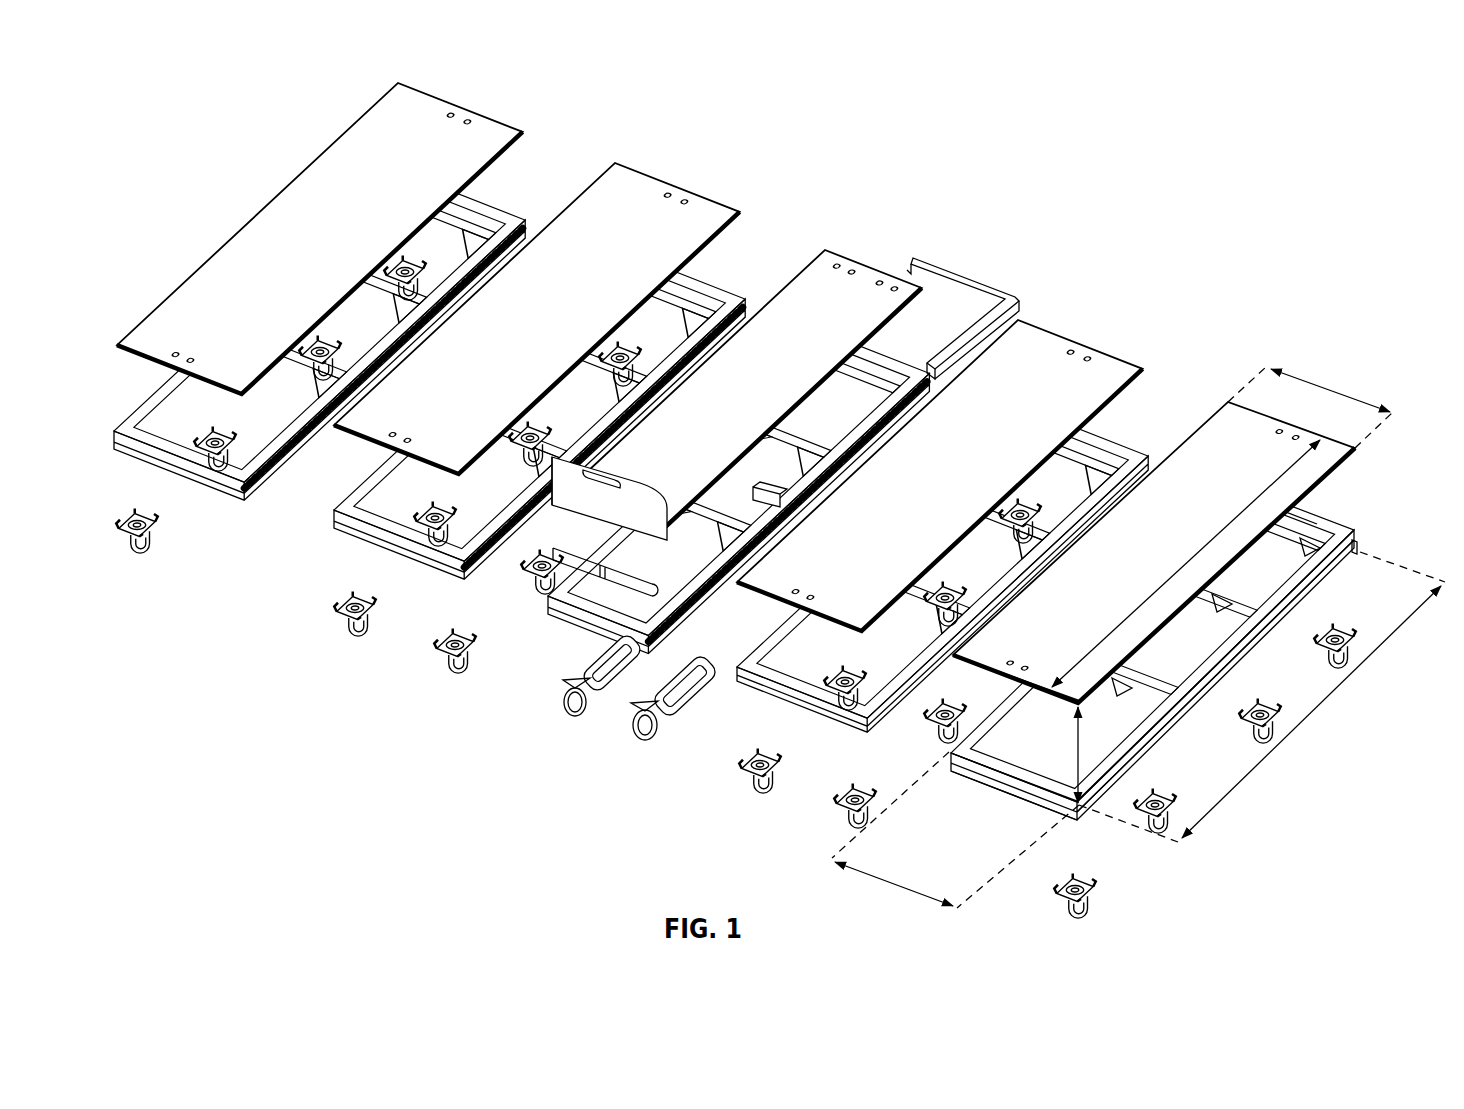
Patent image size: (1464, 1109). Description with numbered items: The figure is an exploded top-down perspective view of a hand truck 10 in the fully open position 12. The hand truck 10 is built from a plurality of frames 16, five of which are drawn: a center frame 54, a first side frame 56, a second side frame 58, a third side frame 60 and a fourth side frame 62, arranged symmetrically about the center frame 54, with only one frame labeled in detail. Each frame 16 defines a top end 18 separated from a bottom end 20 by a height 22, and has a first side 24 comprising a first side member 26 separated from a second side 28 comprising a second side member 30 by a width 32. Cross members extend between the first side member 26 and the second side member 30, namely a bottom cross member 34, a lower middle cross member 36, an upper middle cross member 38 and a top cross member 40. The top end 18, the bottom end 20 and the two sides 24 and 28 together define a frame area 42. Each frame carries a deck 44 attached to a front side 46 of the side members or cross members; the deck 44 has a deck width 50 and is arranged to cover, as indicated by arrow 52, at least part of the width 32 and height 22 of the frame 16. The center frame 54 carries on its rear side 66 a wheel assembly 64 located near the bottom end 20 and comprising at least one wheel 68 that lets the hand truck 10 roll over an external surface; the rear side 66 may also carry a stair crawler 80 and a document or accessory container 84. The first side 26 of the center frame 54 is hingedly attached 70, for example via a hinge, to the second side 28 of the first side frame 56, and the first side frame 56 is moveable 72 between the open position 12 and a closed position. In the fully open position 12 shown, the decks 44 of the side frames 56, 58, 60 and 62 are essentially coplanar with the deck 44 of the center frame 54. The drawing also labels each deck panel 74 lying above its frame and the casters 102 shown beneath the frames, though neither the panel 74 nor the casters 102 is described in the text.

The hand truck 10 is at (990, 125).
The fully open position 12 is at (1198, 295).
The frame 16 is at (1162, 673).
The top end 18 is at (1318, 515).
The bottom end 20 is at (1030, 796).
The height 22 is at (1300, 734).
The first side 24 is at (1320, 591).
The first side member 26 is at (256, 481).
The second side 28 is at (135, 408).
The second side member 30 is at (1000, 726).
The width 32 is at (875, 880).
The bottom cross member 34 is at (1000, 769).
The lower middle cross member 36 is at (1122, 686).
The upper middle cross member 38 is at (1220, 601).
The top cross member 40 is at (1310, 549).
The frame area 42 is at (1190, 561).
The deck 44 is at (296, 242).
The front side 46 is at (1350, 536).
The deck width 50 is at (1340, 389).
The arrow indicating cover 52 is at (1085, 736).
The center frame 54 is at (970, 248).
The first side frame 56 is at (1095, 336).
The second side frame 58 is at (1375, 338).
The third side frame 60 is at (712, 185).
The fourth side frame 62 is at (505, 105).
The wheel assembly 64 is at (641, 721).
The rear side 66 is at (700, 599).
The wheel 68 is at (655, 734).
The hinged attachment 70 is at (524, 214).
The movement 72 is at (1002, 265).
The panel 74 is at (415, 110).
The stair crawler 80 is at (676, 703).
The document or accessory container 84 is at (768, 490).
The caster 102 is at (1090, 906).